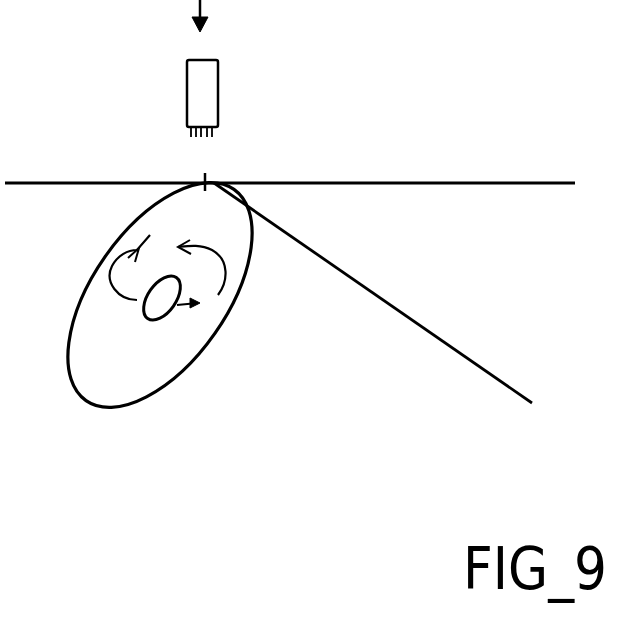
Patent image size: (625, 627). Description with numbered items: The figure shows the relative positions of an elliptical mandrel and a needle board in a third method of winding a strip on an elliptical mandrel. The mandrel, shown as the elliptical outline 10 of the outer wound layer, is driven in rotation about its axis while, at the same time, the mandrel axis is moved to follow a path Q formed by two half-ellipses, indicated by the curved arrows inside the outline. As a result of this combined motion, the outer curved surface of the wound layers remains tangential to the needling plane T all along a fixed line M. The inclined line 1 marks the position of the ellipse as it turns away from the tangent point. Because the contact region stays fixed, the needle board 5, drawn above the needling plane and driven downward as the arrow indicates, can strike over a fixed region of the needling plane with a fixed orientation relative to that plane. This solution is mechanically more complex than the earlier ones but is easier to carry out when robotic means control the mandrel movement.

The sensor head 5 is at (205, 86).
The tangent plane / surface line T is at (515, 181).
The fixed line M is at (216, 168).
The inclined plane 1 is at (472, 358).
The rotating disc 10 is at (156, 295).
The path Q is at (160, 230).